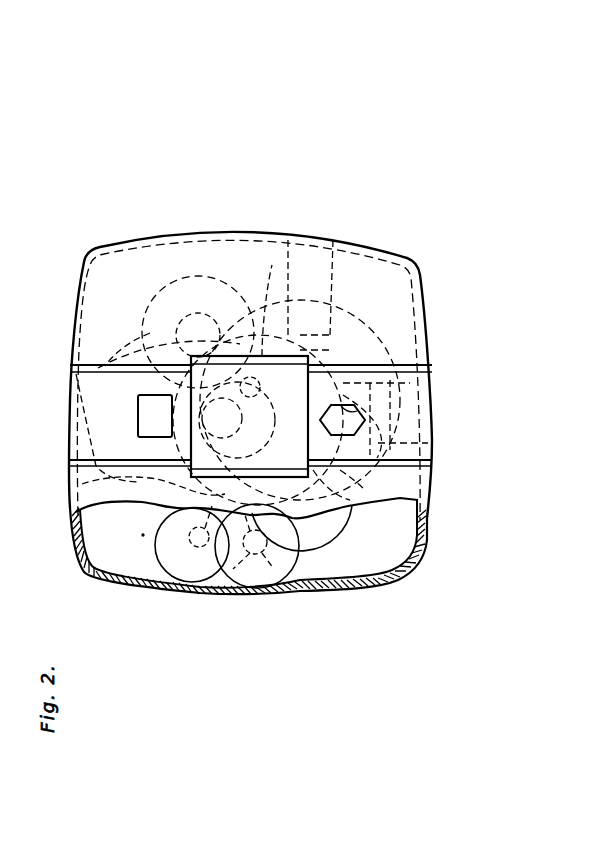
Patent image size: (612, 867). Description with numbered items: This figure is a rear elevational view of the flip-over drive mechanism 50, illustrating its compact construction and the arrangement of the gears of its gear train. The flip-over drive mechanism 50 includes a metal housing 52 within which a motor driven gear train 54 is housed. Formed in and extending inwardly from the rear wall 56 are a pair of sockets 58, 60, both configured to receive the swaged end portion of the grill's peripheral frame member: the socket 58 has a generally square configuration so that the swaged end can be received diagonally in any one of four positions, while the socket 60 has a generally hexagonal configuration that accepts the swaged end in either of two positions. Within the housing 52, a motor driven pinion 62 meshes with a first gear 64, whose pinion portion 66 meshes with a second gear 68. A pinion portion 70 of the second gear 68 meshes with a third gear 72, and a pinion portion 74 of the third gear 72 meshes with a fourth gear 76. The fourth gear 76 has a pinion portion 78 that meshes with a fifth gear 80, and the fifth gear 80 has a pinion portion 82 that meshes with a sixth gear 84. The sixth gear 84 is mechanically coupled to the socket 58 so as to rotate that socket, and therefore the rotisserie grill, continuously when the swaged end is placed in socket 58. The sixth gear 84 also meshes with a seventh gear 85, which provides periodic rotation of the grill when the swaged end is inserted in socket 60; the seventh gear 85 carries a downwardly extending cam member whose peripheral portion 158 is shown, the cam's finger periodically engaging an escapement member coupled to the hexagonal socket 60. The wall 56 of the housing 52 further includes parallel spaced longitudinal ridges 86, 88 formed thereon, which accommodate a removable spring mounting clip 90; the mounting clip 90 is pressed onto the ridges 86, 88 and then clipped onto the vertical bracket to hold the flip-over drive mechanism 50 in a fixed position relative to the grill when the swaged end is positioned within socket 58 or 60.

The flip-over drive mechanism 50 is at (93, 222).
The metal housing 52 is at (107, 586).
The motor driven gear train 54 is at (313, 554).
The rear wall 56 is at (368, 278).
The socket 58 is at (138, 421).
The socket 60 is at (365, 409).
The motor driven pinion 62 is at (192, 547).
The first gear 64 is at (230, 582).
The pinion portion of the first gear 66 is at (270, 573).
The second gear 68 is at (348, 528).
The pinion portion of the second gear 70 is at (247, 517).
The third gear 72 is at (432, 366).
The pinion portion of the third gear 74 is at (330, 352).
The fourth gear 76 is at (295, 247).
The pinion portion of the fourth gear 78 is at (243, 415).
The fifth gear 80 is at (212, 284).
The pinion portion of the fifth gear 82 is at (185, 284).
The sixth gear 84 is at (82, 484).
The seventh gear 85 is at (335, 243).
The longitudinal ridge 86 is at (397, 367).
The longitudinal ridge 88 is at (396, 467).
The removable spring mounting clip 90 is at (262, 356).
The peripheral portion 158 is at (428, 447).